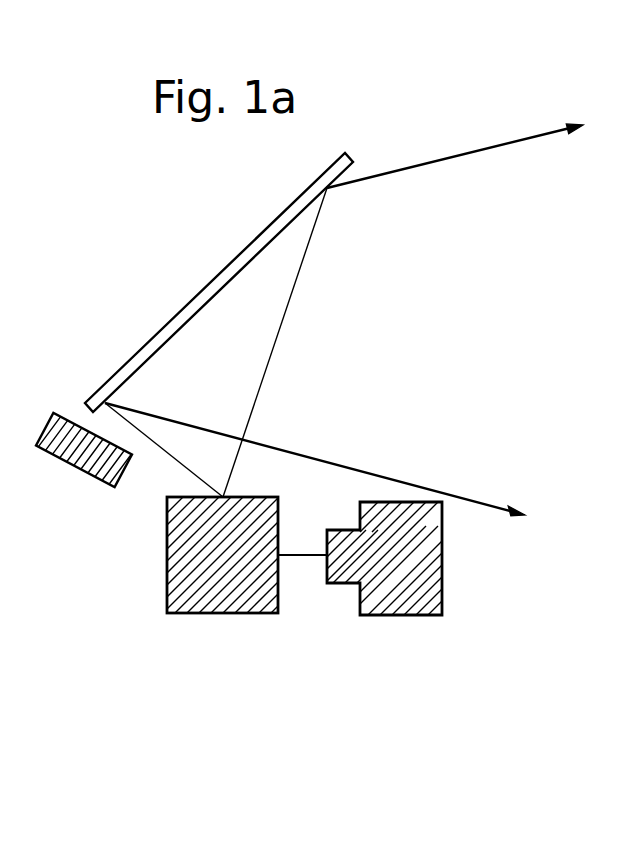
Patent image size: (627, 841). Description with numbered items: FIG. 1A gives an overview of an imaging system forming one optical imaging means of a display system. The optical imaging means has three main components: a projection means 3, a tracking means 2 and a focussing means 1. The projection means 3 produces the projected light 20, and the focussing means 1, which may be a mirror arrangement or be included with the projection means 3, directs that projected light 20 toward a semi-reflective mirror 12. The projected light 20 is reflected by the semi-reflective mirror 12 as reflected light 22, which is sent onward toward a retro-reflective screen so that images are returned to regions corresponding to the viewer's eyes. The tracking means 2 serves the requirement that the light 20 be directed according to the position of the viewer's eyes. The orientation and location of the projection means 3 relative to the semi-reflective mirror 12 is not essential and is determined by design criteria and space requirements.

The focussing means 1 is at (193, 613).
The tracking means 2 is at (72, 468).
The projection means 3 is at (378, 615).
The semi-reflective mirror 12 is at (210, 280).
The projected light 20 is at (213, 430).
The reflected light 22 is at (485, 148).